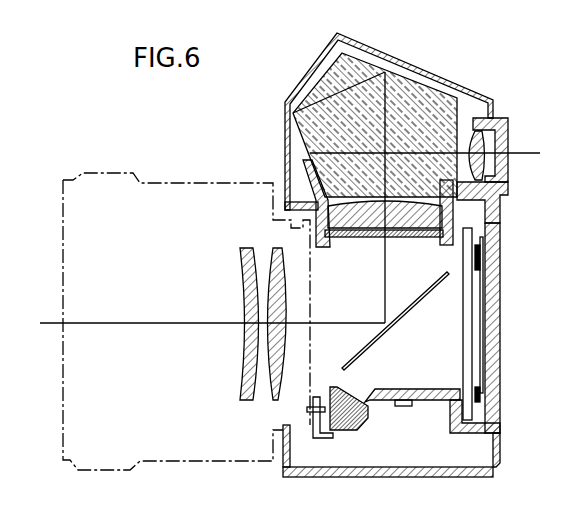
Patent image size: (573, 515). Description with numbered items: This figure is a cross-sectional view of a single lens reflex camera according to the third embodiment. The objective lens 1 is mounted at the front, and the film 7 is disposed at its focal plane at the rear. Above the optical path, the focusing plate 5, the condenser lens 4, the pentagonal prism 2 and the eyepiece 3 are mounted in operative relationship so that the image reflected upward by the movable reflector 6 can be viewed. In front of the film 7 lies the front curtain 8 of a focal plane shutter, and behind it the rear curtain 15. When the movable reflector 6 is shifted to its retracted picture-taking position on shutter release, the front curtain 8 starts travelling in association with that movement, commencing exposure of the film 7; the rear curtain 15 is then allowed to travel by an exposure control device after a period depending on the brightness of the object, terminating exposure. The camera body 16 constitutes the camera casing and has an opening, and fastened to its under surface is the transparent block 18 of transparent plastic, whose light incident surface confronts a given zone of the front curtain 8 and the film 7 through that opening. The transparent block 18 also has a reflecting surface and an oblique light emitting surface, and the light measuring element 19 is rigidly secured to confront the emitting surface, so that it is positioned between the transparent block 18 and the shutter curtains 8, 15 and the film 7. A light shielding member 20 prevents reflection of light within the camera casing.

The objective lens 1 is at (224, 443).
The pentagonal prism 2 is at (420, 102).
The eyepiece 3 is at (494, 110).
The condenser lens 4 is at (423, 237).
The focusing plate 5 is at (369, 238).
The movable reflector 6 is at (414, 306).
The film 7 is at (501, 301).
The front curtain 8 is at (463, 343).
The rear curtain 15 is at (497, 364).
The camera body 16 is at (437, 403).
The transparent block 18 is at (355, 432).
The light measuring element 19 is at (365, 420).
The light shielding member 20 is at (412, 388).